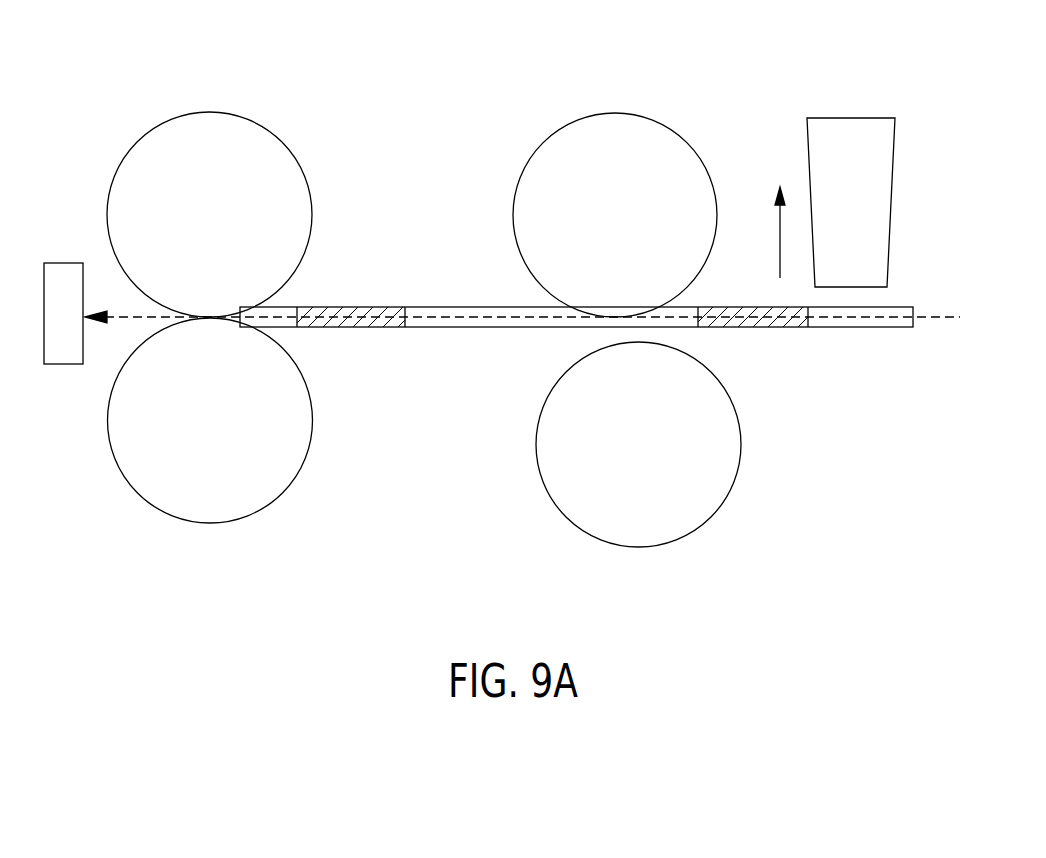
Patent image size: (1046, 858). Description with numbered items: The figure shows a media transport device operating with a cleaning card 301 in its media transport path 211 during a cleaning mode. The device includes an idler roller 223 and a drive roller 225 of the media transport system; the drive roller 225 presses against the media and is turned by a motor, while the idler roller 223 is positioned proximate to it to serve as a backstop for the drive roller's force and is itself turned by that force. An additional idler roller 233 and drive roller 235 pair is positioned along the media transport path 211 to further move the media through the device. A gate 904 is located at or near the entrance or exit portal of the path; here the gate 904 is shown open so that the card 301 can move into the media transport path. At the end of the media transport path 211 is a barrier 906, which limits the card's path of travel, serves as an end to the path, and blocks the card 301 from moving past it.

The idler roller 233 is at (207, 112).
The drive roller 235 is at (210, 523).
The idler roller 223 is at (614, 113).
The drive roller 225 is at (638, 547).
The card 301 is at (470, 306).
The media transport path 211 is at (128, 316).
The barrier 906 is at (65, 365).
The gate 904 is at (850, 118).